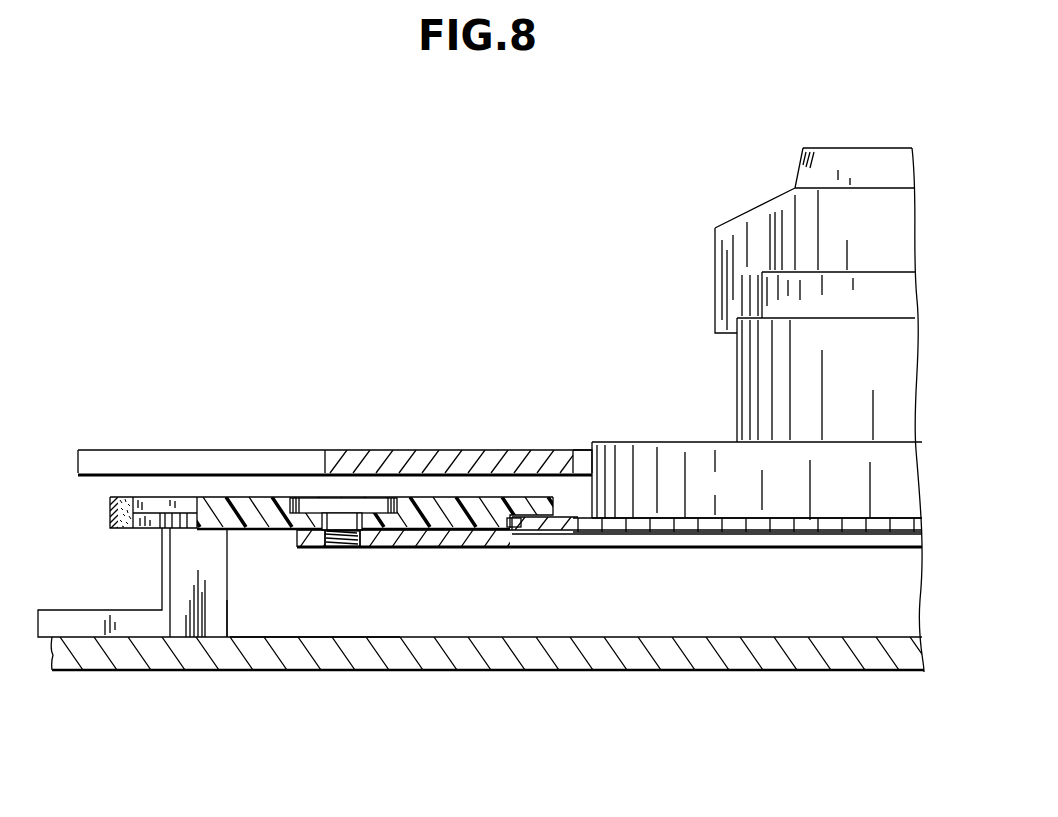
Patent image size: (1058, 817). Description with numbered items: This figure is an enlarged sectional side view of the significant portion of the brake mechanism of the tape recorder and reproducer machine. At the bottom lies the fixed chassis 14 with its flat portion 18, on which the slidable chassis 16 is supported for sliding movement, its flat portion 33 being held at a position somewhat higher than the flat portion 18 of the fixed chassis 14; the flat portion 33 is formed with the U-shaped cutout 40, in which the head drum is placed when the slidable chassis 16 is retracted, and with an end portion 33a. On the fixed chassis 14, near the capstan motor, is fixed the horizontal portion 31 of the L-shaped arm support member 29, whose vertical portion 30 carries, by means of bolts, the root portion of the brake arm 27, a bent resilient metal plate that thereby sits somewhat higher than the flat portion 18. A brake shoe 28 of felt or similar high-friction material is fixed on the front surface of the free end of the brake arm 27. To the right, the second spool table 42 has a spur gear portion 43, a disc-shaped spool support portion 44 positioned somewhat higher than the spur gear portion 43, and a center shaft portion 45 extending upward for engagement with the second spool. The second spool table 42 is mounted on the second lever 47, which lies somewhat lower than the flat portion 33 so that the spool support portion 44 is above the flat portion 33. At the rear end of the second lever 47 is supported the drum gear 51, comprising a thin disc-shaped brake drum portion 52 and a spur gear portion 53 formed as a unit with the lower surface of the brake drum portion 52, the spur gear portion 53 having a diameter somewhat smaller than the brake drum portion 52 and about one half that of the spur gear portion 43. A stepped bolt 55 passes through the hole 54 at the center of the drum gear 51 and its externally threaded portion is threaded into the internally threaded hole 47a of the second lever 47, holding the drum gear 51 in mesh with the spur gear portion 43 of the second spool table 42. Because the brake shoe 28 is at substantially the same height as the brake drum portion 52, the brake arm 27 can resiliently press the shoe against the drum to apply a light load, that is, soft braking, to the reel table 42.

The fixed chassis 14 is at (355, 672).
The slidable chassis 16 is at (363, 450).
The flat portion 18 is at (263, 660).
The brake arm 27 is at (138, 533).
The brake shoe 28 is at (120, 533).
The arm support member 29 is at (228, 608).
The vertical portion 30 is at (218, 582).
The horizontal portion 31 is at (77, 612).
The flat portion 33 is at (460, 458).
The plate end portion 33a is at (582, 452).
The U-shaped cutout 40 is at (322, 452).
The second spool table 42 is at (638, 442).
The spur gear portion 43 is at (712, 523).
The spool support portion 44 is at (703, 448).
The center shaft portion 45 is at (725, 258).
The second lever 47 is at (630, 544).
The internally threaded hole 47a is at (337, 548).
The drum gear 51 is at (237, 497).
The brake drum portion 52 is at (154, 497).
The spur gear portion 53 is at (182, 529).
The hole 54 is at (321, 531).
The stepped bolt 55 is at (303, 497).